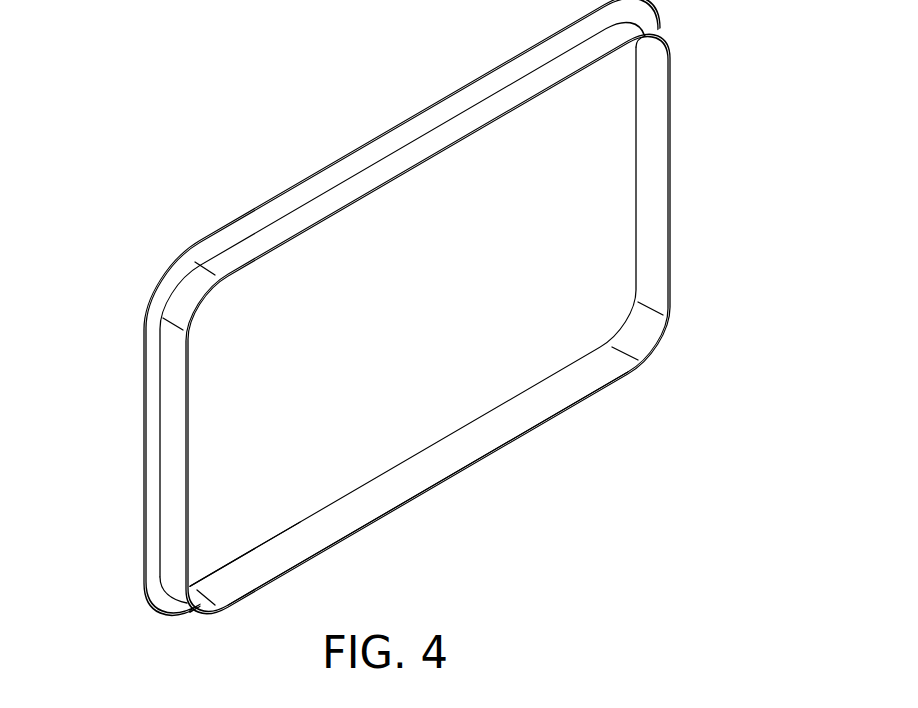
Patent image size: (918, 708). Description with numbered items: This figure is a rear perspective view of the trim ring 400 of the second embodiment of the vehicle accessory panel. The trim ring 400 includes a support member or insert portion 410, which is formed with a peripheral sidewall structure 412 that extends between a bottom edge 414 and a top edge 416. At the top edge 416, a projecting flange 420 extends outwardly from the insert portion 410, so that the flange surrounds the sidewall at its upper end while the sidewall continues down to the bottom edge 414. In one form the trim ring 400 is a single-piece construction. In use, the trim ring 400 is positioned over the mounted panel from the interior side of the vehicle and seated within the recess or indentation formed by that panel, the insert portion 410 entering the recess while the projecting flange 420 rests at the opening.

The trim ring 400 is at (161, 116).
The insert portion 410 is at (682, 191).
The peripheral sidewall structure 412 is at (498, 427).
The bottom edge 414 is at (418, 493).
The top edge 416 is at (276, 534).
The projecting flange 420 is at (317, 156).